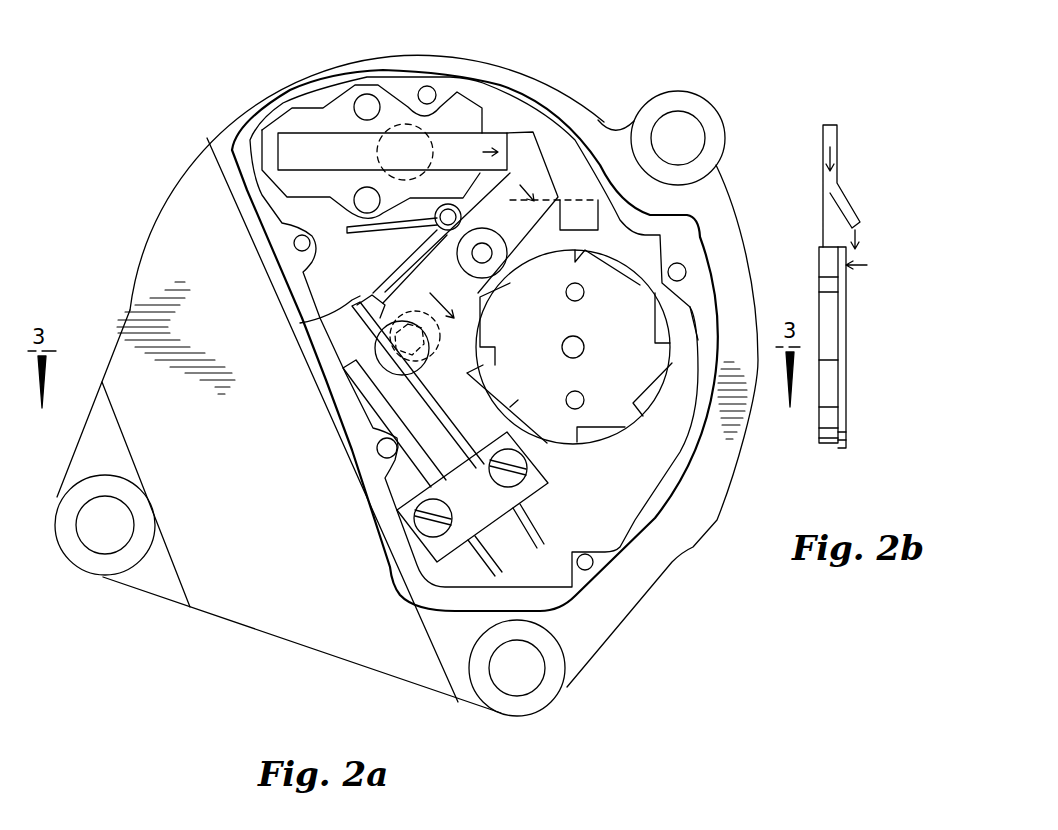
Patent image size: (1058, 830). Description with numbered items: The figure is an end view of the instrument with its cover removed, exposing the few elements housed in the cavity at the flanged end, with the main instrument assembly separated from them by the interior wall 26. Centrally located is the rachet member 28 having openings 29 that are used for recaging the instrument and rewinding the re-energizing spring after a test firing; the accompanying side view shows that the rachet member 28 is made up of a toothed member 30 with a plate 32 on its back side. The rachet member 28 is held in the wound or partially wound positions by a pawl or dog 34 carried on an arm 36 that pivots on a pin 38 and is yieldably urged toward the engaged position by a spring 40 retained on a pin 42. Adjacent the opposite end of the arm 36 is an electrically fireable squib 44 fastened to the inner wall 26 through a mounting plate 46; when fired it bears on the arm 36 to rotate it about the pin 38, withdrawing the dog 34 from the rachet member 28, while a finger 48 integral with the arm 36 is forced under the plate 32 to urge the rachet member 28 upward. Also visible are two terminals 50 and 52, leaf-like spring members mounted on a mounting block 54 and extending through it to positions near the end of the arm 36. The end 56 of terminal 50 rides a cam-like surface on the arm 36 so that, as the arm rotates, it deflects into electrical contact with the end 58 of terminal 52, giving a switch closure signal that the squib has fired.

In FIG. 2A, the interior wall 26 is at (667, 453).
In FIG. 2A, the rachet member 28 is at (668, 313).
In FIG. 2A, the openings 29 is at (571, 293).
In FIG. 2B, the toothed member 30 is at (825, 267).
In FIG. 2A, the plate 32 is at (597, 437).
In FIG. 2B, the plate 32 is at (842, 303).
In FIG. 2A, the pawl or dog 34 is at (486, 368).
In FIG. 2A, the arm 36 is at (418, 260).
In FIG. 2A, the pin 38 is at (485, 255).
In FIG. 2A, the spring 40 is at (375, 283).
In FIG. 2A, the pin 42 is at (385, 294).
In FIG. 2A, the electrically fireable squib 44 is at (453, 192).
In FIG. 2A, the mounting plate 46 is at (330, 108).
In FIG. 2A, the finger 48 is at (585, 212).
In FIG. 2B, the finger 48 is at (848, 212).
In FIG. 2A, the terminal 50 is at (532, 535).
In FIG. 2A, the terminal 52 is at (490, 560).
In FIG. 2A, the mounting block 54 is at (420, 500).
In FIG. 2A, the end of terminal 50 56 is at (300, 323).
In FIG. 2A, the end of terminal 52 58 is at (366, 360).